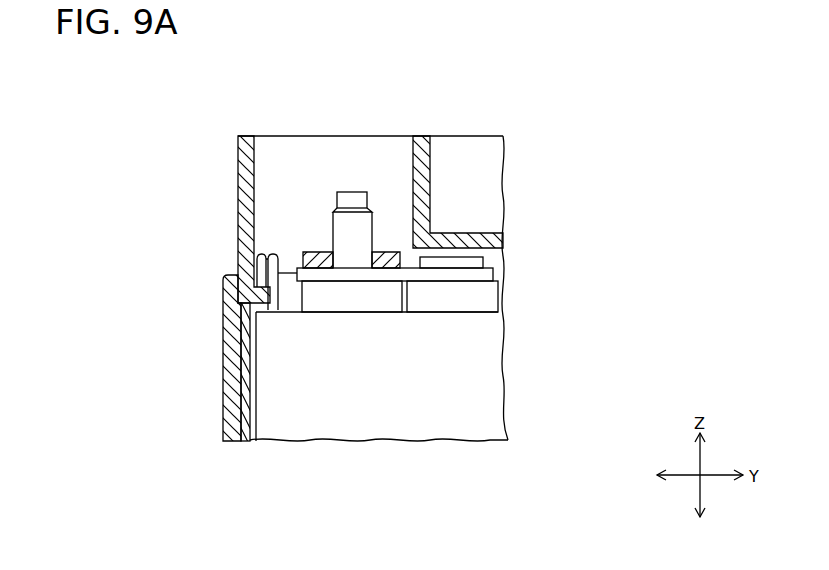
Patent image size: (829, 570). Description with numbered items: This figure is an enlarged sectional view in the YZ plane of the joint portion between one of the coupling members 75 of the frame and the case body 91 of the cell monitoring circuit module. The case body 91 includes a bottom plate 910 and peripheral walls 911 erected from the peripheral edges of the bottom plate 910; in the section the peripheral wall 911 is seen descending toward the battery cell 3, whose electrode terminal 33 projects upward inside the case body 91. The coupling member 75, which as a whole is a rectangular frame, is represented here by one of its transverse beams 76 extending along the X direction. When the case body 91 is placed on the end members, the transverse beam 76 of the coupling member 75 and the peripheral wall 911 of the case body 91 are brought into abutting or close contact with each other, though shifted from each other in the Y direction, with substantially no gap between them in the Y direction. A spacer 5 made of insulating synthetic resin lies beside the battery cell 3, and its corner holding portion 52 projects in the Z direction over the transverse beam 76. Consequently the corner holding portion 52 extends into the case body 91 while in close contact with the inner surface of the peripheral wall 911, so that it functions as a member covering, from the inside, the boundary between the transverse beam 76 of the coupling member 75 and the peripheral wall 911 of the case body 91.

The case body 91 is at (324, 257).
The peripheral wall 911 is at (238, 210).
The bottom plate 910 is at (468, 238).
The transverse beam 76 is at (248, 303).
The coupling member 75 is at (221, 347).
The corner holding portion 52 is at (248, 400).
The spacer 5 is at (196, 379).
The battery cell 3 is at (455, 380).
The electrode terminal 33 is at (352, 186).